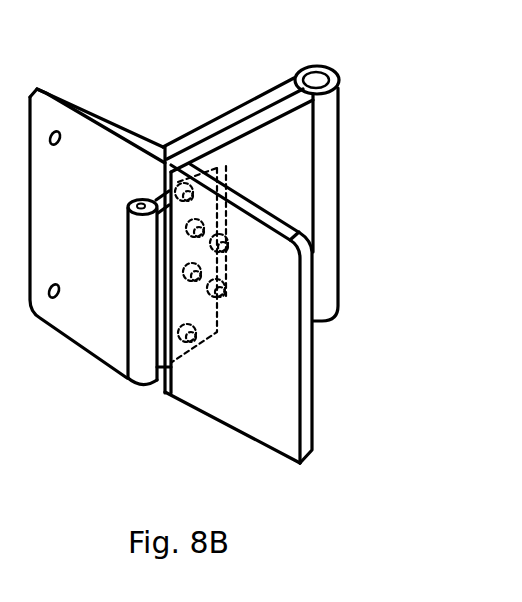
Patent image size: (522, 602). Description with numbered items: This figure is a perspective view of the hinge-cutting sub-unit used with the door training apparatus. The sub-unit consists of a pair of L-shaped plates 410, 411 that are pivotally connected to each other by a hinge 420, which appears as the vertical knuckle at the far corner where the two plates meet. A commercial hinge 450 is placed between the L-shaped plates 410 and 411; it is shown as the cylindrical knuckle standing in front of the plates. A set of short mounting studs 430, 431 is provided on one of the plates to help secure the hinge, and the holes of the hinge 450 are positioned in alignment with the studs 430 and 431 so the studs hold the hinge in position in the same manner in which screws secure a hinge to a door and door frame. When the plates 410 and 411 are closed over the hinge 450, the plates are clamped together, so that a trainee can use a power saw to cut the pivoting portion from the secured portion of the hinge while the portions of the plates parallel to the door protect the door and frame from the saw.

The L-shaped plate 410 is at (107, 113).
The L-shaped plate 411 is at (235, 433).
The hinge 420 is at (330, 64).
The mounting stud 430 is at (221, 263).
The mounting stud 431 is at (214, 297).
The commercial hinge 450 is at (129, 384).